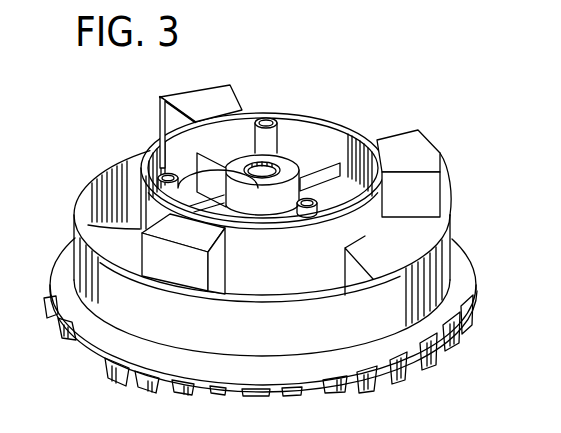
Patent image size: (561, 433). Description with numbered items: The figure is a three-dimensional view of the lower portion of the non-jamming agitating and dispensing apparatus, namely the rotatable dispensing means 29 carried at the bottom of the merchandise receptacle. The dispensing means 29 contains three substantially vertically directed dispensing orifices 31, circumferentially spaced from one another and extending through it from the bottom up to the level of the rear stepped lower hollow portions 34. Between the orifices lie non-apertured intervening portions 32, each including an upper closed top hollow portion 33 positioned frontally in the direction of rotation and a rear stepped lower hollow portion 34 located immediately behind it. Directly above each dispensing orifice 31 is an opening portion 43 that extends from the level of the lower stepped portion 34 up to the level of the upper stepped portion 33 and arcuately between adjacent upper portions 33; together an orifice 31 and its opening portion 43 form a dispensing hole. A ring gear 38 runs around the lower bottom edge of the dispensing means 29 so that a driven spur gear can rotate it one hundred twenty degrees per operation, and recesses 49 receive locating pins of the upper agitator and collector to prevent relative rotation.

The dispensing means 29 is at (336, 115).
The dispensing orifices 31 is at (125, 172).
The intervening portions 32 is at (300, 172).
The upper closed top hollow portions 33 is at (211, 107).
The rear stepped lower hollow portions 34 is at (125, 243).
The ring gear 38 is at (95, 376).
The opening portions 43 is at (222, 172).
The recesses 49 is at (267, 119).